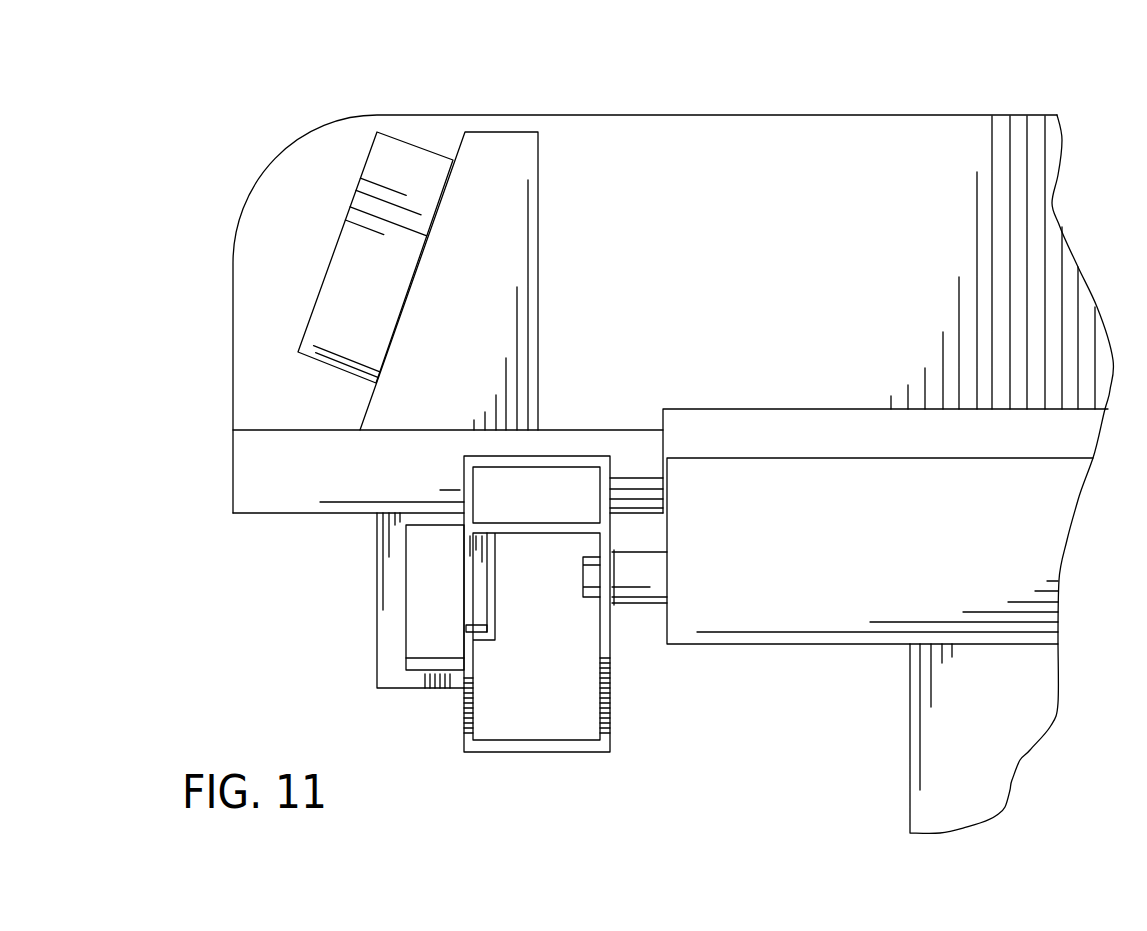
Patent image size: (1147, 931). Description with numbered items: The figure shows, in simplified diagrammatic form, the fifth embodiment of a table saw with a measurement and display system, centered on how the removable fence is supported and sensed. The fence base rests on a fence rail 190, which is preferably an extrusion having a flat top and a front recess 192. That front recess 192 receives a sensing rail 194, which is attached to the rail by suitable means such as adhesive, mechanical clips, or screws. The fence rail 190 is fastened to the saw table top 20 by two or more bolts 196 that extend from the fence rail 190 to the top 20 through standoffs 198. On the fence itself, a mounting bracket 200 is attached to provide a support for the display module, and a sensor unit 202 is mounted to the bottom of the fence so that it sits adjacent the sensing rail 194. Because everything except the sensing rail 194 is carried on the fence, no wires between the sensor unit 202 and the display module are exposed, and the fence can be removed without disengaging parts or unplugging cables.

The mounting bracket 200 is at (478, 247).
The saw table top 20 is at (835, 457).
The fence rail 190 is at (535, 752).
The sensing rail 194 is at (473, 570).
The front recess 192 is at (476, 627).
The bolts 196 is at (590, 598).
The standoffs 198 is at (637, 607).
The sensor unit 202 is at (430, 578).